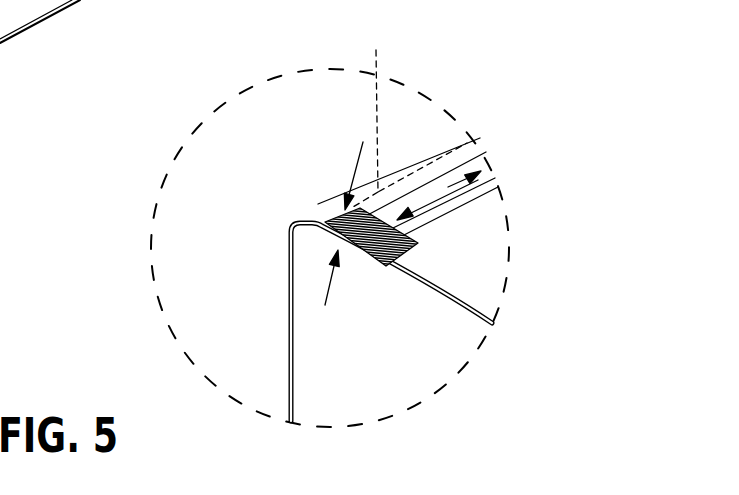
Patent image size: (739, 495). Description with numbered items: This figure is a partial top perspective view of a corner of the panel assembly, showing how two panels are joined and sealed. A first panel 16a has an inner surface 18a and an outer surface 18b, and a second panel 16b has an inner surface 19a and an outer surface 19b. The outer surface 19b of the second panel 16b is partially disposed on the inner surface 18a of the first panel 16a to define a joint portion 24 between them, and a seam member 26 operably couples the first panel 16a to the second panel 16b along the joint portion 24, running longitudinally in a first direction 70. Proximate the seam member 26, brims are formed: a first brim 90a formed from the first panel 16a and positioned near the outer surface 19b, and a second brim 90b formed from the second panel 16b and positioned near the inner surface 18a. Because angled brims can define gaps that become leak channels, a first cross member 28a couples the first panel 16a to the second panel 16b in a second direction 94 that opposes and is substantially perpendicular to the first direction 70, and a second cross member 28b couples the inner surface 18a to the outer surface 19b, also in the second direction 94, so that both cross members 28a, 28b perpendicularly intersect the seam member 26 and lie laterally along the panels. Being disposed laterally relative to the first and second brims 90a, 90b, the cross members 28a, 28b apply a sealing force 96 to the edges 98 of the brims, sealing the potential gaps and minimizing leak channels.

The first panel 16a is at (413, 154).
The second panel 16b is at (466, 298).
The inner surface of first panel 18a is at (315, 373).
The outer surface of first panel 18b is at (322, 222).
The inner surface of second panel 19a is at (465, 310).
The outer surface of second panel 19b is at (468, 245).
The joint portion 24 is at (362, 262).
The seam member 26 is at (445, 157).
The first cross member 28a is at (360, 262).
The second cross member 28b is at (378, 264).
The first direction 70 is at (458, 163).
The first brim 90a is at (502, 186).
The second brim 90b is at (410, 112).
The second direction 94 is at (372, 262).
The sealing force 96 is at (363, 142).
The edges 98 is at (322, 214).